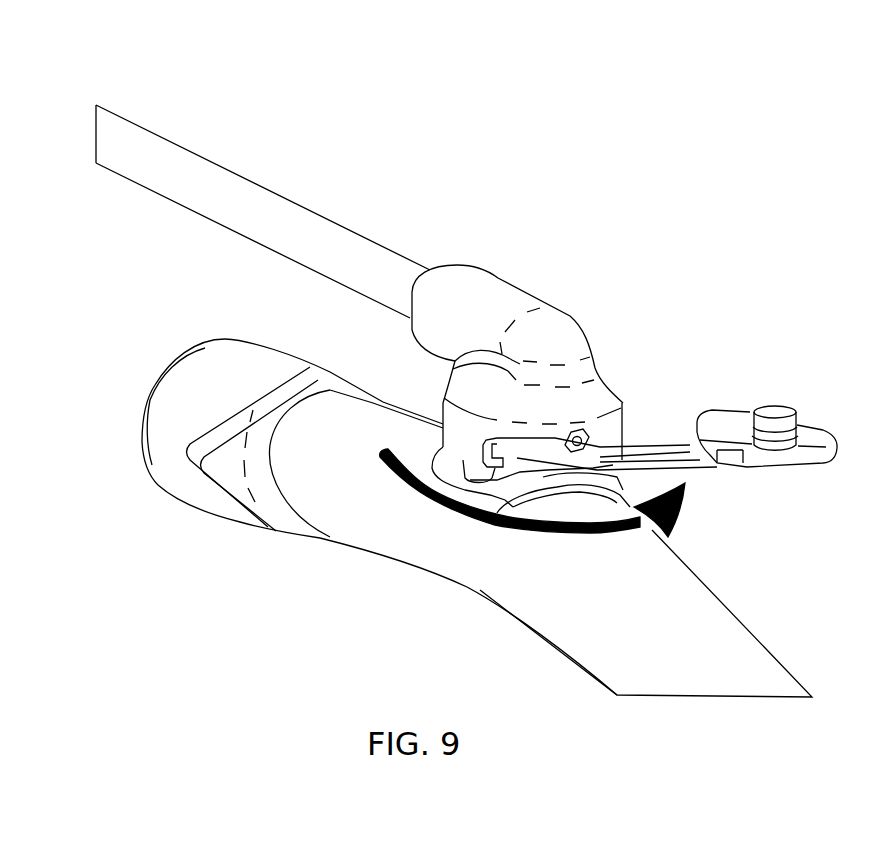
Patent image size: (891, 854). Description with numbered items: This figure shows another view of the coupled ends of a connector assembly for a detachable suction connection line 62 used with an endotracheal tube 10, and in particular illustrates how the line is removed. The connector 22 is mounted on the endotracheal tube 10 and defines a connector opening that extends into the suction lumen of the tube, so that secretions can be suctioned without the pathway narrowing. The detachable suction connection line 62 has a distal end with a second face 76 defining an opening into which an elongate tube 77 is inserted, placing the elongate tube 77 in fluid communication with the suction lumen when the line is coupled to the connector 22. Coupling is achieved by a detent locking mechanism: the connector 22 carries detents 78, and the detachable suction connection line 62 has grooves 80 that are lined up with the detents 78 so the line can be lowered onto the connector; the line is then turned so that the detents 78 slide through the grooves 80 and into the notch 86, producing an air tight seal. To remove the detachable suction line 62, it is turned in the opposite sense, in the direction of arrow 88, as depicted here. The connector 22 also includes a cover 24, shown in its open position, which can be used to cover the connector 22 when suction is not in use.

The endotracheal tube 10 is at (360, 583).
The connector 22 is at (535, 497).
The cover 24 is at (792, 467).
The detachable suction connection line 62 is at (568, 298).
The second face 76 is at (446, 265).
The elongate tube 77 is at (253, 187).
The detents 78 is at (600, 437).
The grooves 80 is at (504, 457).
The notch 86 is at (586, 431).
The arrow 88 is at (397, 487).